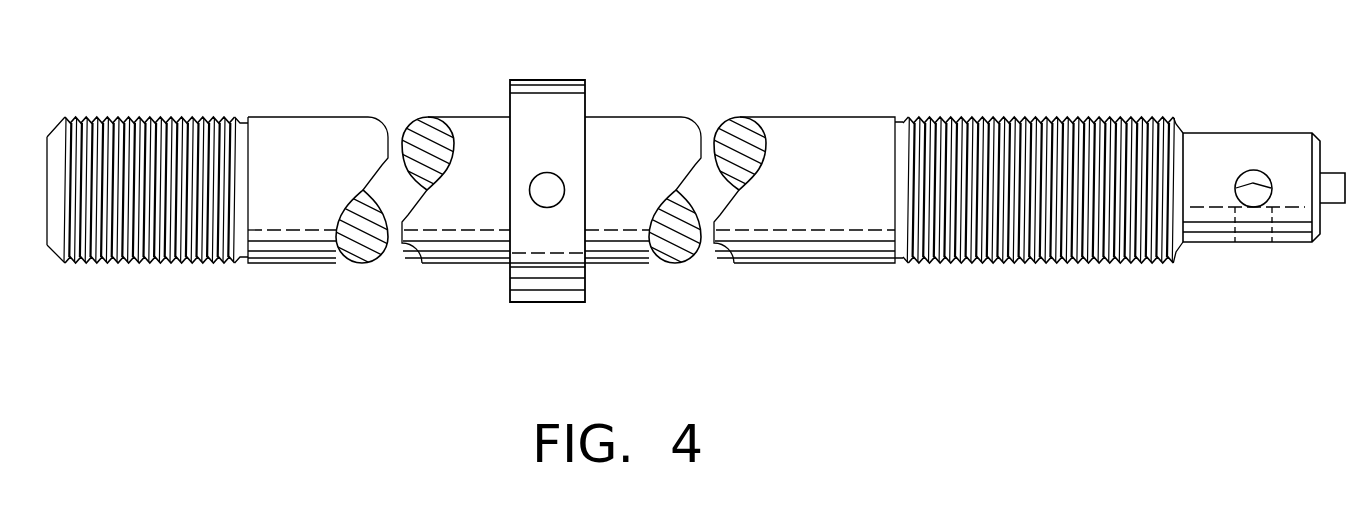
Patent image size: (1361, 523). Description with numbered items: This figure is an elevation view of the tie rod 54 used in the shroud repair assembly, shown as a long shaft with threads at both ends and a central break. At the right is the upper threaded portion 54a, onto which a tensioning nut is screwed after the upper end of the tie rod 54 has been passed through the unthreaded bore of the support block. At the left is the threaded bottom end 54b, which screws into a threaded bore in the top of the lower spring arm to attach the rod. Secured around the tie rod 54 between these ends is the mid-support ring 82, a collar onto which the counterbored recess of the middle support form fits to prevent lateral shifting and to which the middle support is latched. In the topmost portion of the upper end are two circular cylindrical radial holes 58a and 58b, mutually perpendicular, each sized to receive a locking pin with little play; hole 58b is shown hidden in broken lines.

The tie rod 54 is at (843, 117).
The upper threaded portion 54a is at (1037, 262).
The threaded bottom end 54b is at (163, 264).
The mid-support ring 82 is at (543, 80).
The radial hole 58a is at (1258, 170).
The radial hole 58b is at (1250, 227).